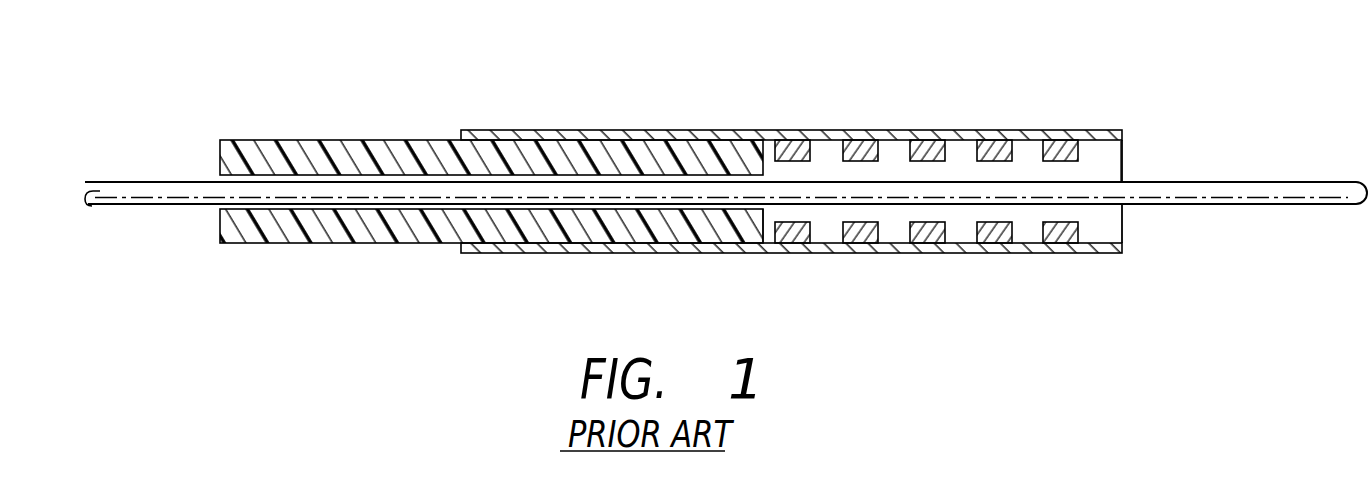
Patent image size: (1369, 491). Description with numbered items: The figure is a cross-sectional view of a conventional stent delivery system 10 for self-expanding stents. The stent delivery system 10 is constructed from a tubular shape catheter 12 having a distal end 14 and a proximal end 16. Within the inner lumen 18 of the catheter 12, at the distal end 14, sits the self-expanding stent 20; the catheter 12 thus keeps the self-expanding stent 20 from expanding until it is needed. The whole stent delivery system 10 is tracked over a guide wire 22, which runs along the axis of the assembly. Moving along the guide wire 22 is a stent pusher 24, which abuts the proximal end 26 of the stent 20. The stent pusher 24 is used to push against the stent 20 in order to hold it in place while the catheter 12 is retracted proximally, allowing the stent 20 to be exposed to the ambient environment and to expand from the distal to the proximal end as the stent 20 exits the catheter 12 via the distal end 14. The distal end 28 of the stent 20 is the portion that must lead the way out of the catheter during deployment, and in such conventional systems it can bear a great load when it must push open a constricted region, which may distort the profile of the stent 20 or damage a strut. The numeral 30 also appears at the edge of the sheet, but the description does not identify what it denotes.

The stent delivery system 10 is at (400, 115).
The catheter 12 is at (1003, 130).
The distal end 14 is at (1118, 253).
The proximal end 16 is at (460, 257).
The inner lumen 18 is at (1124, 240).
The self-expanding stent 20 is at (923, 147).
The guide wire 22 is at (1285, 190).
The stent pusher 24 is at (308, 148).
The proximal end of stent 26 is at (762, 219).
The distal end of stent 28 is at (1100, 242).
The element of following figure 30 is at (313, 490).